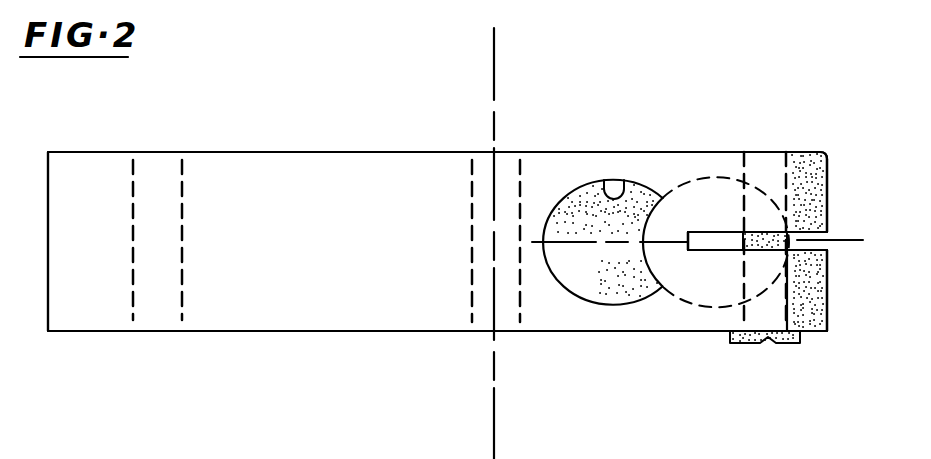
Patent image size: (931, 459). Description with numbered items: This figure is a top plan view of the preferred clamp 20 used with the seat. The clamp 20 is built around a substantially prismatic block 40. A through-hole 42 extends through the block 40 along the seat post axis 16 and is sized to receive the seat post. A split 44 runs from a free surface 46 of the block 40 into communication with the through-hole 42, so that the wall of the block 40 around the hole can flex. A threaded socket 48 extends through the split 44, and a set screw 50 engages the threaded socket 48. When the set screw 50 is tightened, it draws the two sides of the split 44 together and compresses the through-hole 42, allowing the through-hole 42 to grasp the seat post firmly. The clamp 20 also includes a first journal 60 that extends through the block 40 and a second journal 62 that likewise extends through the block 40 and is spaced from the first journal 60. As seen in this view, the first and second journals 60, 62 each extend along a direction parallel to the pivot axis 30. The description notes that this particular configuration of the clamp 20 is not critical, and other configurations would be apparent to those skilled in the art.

The clamp 20 is at (363, 345).
The prismatic block 40 is at (309, 168).
The first journal 60 is at (182, 167).
The second journal 62 is at (480, 156).
The pivot axis 30 is at (496, 52).
The seat post axis 16 is at (598, 250).
The through-hole 42 is at (614, 179).
The split 44 is at (710, 231).
The free surface 46 is at (828, 200).
The threaded socket 48 is at (800, 288).
The set screw 50 is at (733, 341).